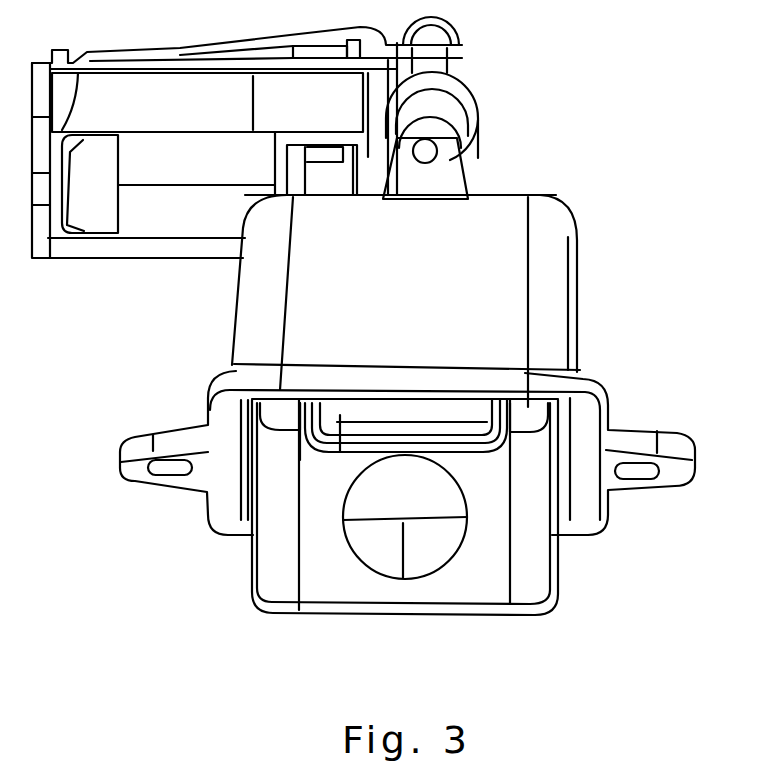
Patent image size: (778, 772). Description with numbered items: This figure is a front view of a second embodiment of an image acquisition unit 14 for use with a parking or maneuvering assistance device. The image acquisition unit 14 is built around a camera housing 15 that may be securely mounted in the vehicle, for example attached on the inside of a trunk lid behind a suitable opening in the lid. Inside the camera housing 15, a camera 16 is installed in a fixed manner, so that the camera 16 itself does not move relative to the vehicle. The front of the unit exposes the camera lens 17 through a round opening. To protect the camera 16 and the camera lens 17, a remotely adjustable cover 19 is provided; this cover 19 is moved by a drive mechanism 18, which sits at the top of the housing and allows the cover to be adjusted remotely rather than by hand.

The image acquisition unit 14 is at (225, 522).
The camera housing 15 is at (547, 259).
The camera 16 is at (528, 570).
The camera lens 17 is at (433, 550).
The drive mechanism 18 is at (477, 115).
The remotely adjustable cover 19 is at (335, 402).